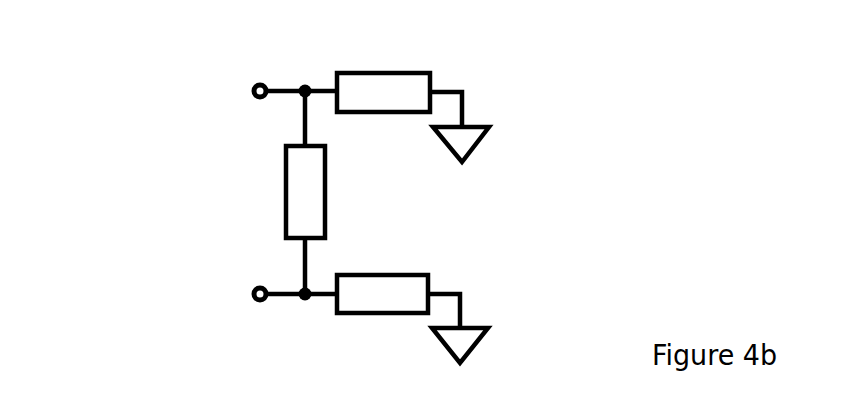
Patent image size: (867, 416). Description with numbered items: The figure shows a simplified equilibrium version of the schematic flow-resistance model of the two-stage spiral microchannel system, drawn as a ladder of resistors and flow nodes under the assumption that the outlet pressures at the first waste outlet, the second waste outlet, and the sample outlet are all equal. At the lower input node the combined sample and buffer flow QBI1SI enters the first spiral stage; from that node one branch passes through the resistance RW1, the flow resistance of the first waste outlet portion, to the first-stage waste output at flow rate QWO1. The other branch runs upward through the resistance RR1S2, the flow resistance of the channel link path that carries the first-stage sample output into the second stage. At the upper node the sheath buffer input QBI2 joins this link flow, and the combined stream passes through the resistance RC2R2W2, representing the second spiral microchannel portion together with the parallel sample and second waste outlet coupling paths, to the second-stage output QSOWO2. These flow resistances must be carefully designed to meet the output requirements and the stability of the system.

The flow resistance of the second spiral microchannel portion and parallel outlet co RC2R2W2 is at (383, 72).
The flow resistance of the channel link path RR1S2 is at (269, 192).
The flow resistance of the first waste outlet portion RW1 is at (382, 275).
The input flow rate of sheath buffer into the second stage QBI2 is at (220, 83).
The input flow rate of sample and buffer into the first spiral stage QBI1SI is at (204, 288).
The output flow rate of the sample output and waste output of the second stage QSOWO2 is at (523, 88).
The flow rate at the waste output of the first stage QWO1 is at (504, 290).